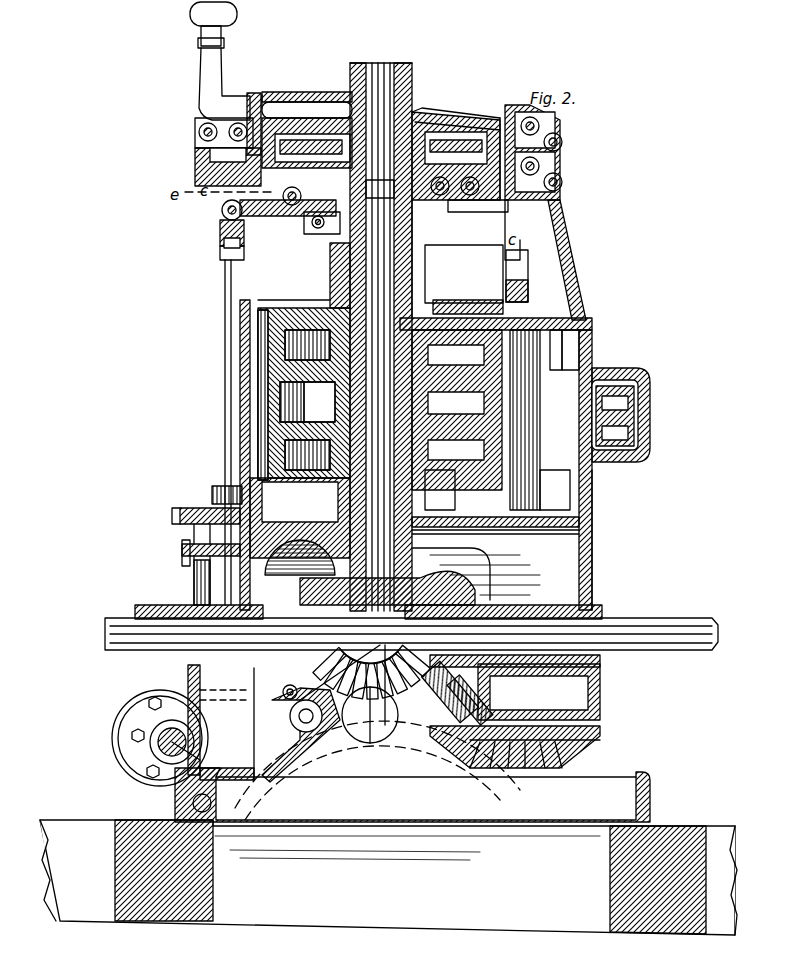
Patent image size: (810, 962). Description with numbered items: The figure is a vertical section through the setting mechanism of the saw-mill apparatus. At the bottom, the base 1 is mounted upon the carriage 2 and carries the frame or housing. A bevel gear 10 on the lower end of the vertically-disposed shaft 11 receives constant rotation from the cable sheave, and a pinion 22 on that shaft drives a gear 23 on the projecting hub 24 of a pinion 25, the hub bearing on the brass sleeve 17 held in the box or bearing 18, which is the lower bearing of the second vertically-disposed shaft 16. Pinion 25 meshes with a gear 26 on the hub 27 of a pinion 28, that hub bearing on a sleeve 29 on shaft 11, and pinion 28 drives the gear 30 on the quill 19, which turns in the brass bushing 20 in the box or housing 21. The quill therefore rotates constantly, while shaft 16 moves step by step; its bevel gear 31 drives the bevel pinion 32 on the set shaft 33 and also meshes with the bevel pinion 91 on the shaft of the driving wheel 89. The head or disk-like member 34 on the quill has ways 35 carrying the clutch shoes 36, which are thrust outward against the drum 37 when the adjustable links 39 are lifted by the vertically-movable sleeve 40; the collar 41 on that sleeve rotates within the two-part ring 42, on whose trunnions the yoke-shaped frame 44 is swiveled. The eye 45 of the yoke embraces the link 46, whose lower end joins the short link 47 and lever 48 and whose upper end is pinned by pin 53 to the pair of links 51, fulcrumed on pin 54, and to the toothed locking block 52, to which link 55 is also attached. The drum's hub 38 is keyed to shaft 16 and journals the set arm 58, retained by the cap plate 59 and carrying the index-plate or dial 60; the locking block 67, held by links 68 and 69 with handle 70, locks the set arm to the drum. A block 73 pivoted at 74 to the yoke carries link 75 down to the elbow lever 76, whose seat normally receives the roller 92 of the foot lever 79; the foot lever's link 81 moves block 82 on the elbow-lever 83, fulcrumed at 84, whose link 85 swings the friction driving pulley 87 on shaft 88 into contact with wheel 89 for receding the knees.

The base 1 is at (412, 795).
The carriage 2 is at (388, 877).
The bevel gear 10 is at (580, 752).
The vertically-disposed shaft 11 is at (590, 330).
The second vertically-disposed shaft 16 is at (375, 64).
The brass sleeve 17 is at (440, 512).
The box or bearing 18 is at (340, 494).
The quill 19 is at (427, 287).
The brass sleeve or bushing 20 is at (427, 262).
The box or housing 21 is at (330, 280).
The pinion 22 is at (552, 486).
The gear 23 is at (483, 484).
The projecting hub 24 is at (318, 436).
The pinion 25 is at (325, 400).
The gear 26 is at (640, 424).
The hub 27 is at (620, 462).
The pinion 28 is at (570, 366).
The sleeve 29 is at (563, 346).
The gear 30 is at (258, 338).
The bevel gear 31 is at (432, 585).
The bevel pinion 32 is at (440, 698).
The set shaft 33 is at (605, 640).
The head or disk-like member 34 is at (476, 120).
The ways or guides 35 is at (490, 118).
The shoe or clutch member 36 is at (311, 153).
The drum 37 is at (436, 112).
The hub 38 is at (270, 120).
The adjustable links 39 is at (290, 206).
The vertically-movable sleeve 40 is at (405, 190).
The collar 41 is at (438, 196).
The two-part ring 42 is at (317, 229).
The yoke-shaped frame 44 is at (262, 216).
The eye 45 is at (486, 212).
The link 46 is at (562, 203).
The short link 47 is at (530, 262).
The lever 48 is at (530, 284).
The links 51 is at (562, 170).
The locking block 52 is at (562, 142).
The pin 53 is at (562, 160).
The pin or shaft 54 is at (562, 184).
The link 55 is at (540, 126).
The set arm 58 is at (266, 94).
The cap plate 59 is at (400, 66).
The index-plate or dial 60 is at (470, 118).
The locking block 67 is at (249, 112).
The link 68 is at (198, 164).
The link 69 is at (199, 116).
The handle 70 is at (203, 50).
The block 73 is at (228, 252).
The pivot connection 74 is at (222, 210).
The link 75 is at (225, 296).
The elbow lever 76 is at (184, 550).
The foot lever 79 is at (196, 505).
The link 81 is at (192, 588).
The block 82 is at (210, 676).
The elbow-lever 83 is at (290, 735).
The fulcrum 84 is at (320, 735).
The link 85 is at (288, 690).
The friction driving pulley 87 is at (124, 748).
The shaft 88 is at (158, 748).
The driving wheel 89 is at (440, 800).
The bevel pinion 91 is at (370, 715).
The roller 92 is at (214, 494).